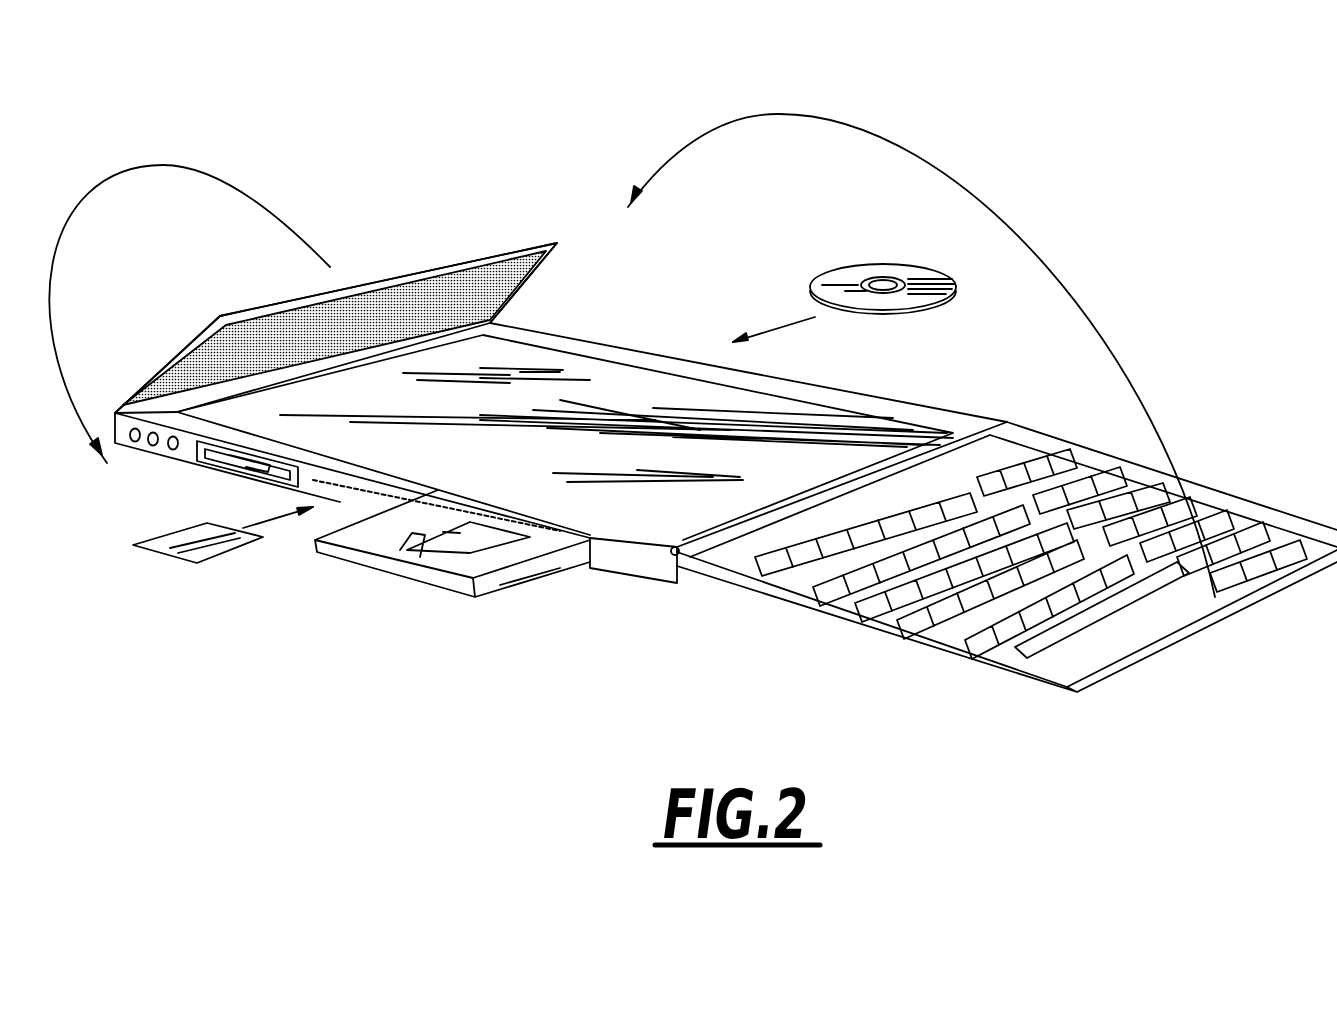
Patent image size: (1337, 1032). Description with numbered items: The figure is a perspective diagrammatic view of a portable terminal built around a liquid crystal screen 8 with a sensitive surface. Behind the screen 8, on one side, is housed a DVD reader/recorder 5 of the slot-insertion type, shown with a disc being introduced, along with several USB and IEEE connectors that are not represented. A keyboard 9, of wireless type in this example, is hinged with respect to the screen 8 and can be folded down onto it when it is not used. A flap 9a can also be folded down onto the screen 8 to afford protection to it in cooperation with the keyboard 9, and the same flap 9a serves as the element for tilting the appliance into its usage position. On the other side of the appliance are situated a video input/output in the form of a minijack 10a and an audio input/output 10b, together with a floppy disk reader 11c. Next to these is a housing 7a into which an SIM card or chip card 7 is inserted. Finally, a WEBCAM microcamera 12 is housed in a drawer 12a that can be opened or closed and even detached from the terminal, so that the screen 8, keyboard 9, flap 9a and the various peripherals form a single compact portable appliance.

The DVD reader/recorder 5 is at (876, 264).
The SIM card or chip card 7 is at (158, 565).
The housing 7a is at (415, 527).
The liquid crystal screen 8 is at (622, 385).
The keyboard 9 is at (1113, 642).
The flap 9a is at (357, 285).
The minijack 10a is at (132, 441).
The audio input/output 10b is at (173, 455).
The floppy disk reader 11c is at (198, 446).
The microcamera 12 is at (400, 538).
The drawer 12a is at (530, 576).